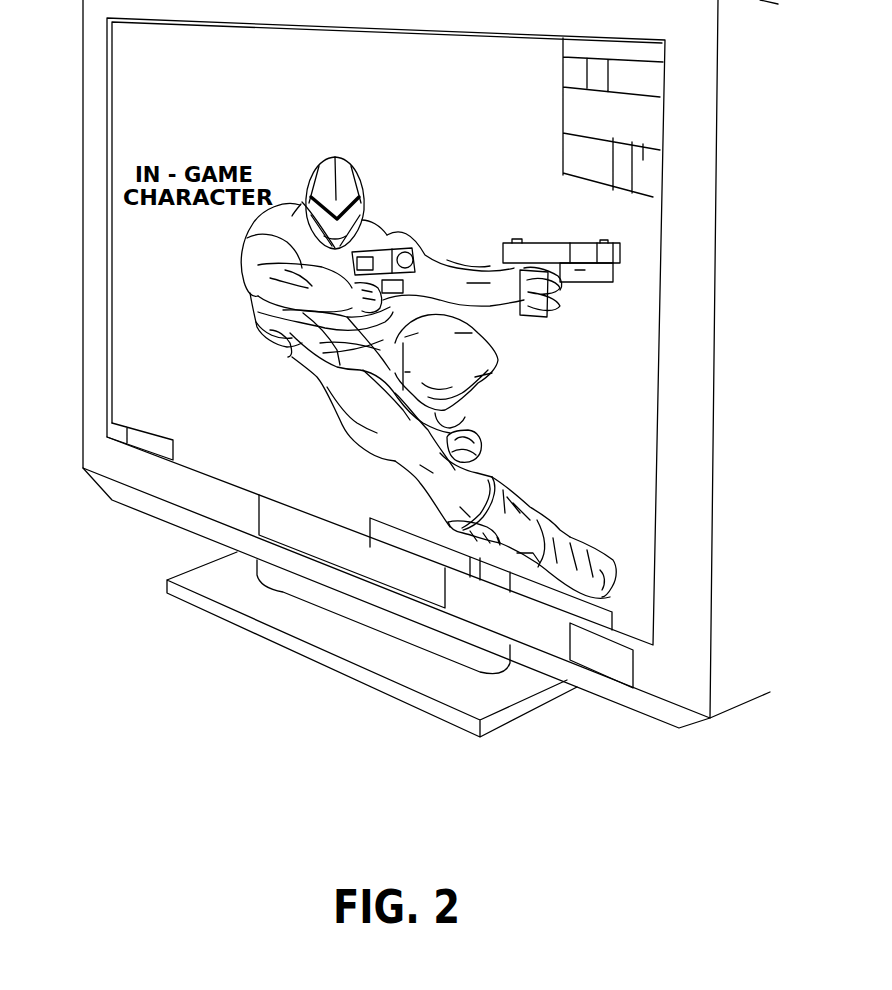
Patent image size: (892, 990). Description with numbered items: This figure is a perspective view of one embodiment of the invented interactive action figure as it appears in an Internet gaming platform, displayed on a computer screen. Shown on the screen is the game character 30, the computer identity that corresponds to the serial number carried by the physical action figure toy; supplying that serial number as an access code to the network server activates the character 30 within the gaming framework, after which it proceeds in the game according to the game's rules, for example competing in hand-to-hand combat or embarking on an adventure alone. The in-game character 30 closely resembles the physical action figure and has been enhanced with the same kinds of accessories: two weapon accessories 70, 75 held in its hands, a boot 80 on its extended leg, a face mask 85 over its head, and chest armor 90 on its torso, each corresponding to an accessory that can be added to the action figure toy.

The game character 30 is at (413, 176).
The face mask 85 is at (369, 342).
The weapon accessory 70 is at (405, 245).
The weapon accessory 75 is at (597, 290).
The boot 80 is at (600, 535).
The chest armor 90 is at (242, 311).